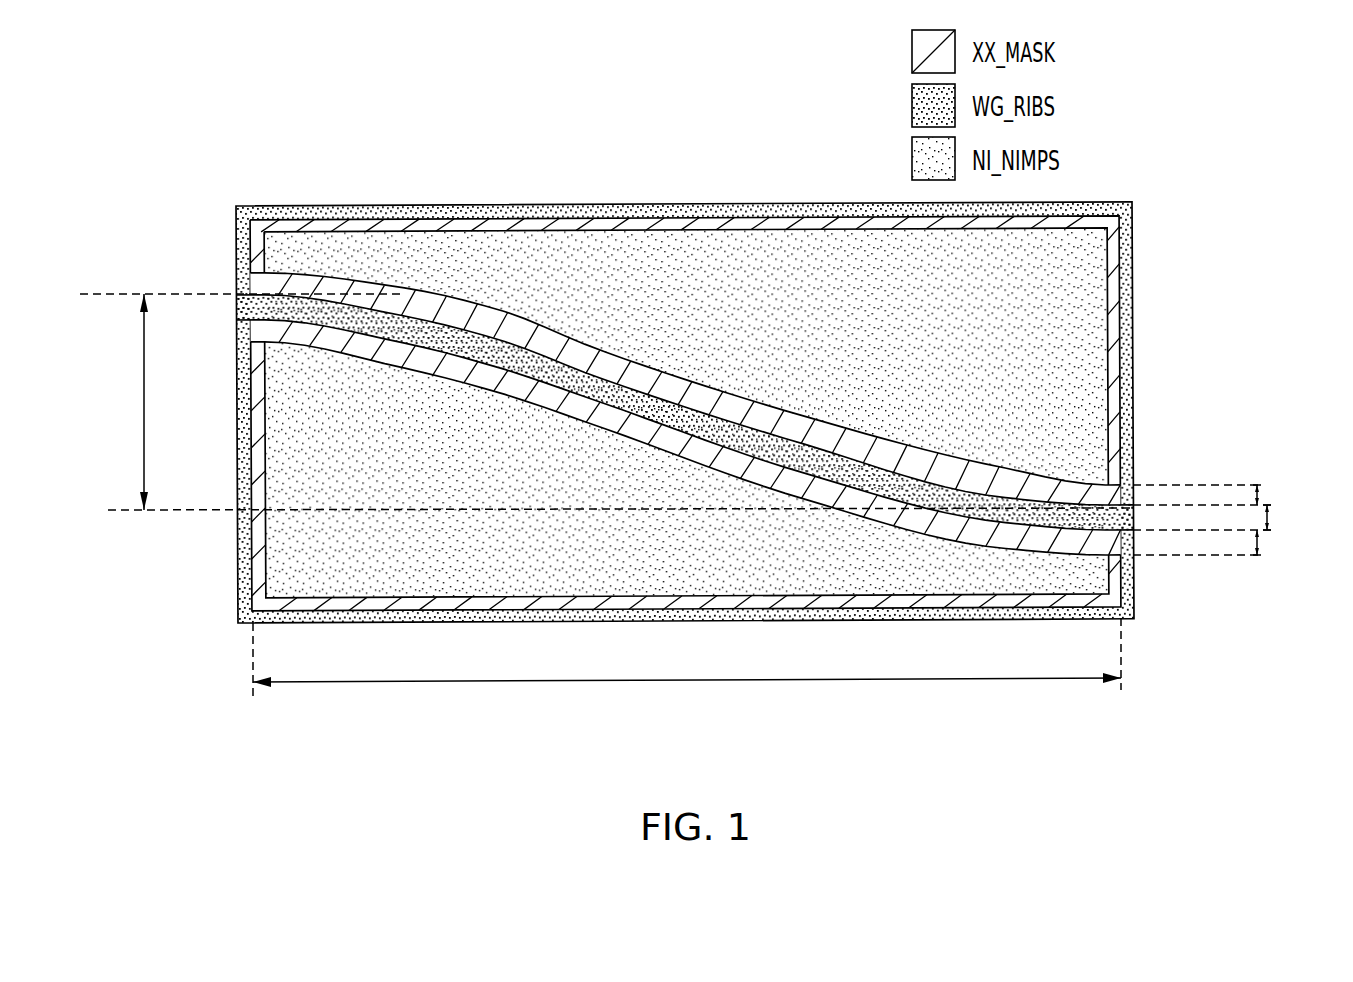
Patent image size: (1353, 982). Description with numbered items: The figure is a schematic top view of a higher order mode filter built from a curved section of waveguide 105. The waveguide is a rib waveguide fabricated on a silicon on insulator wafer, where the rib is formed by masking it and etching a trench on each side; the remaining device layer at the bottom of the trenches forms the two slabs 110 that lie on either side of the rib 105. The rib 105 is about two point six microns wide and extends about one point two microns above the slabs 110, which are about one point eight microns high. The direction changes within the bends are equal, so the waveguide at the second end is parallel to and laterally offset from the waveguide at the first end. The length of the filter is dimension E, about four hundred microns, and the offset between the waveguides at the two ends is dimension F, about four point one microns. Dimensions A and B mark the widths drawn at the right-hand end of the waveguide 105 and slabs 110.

The curved section of waveguide 105 is at (395, 325).
The slabs 110 is at (447, 430).
The core width dimension A is at (1268, 517).
The cladding width dimension B is at (1258, 494).
The length of the higher order mode filter E is at (681, 684).
The offset between the waveguides at the two ends F is at (144, 403).